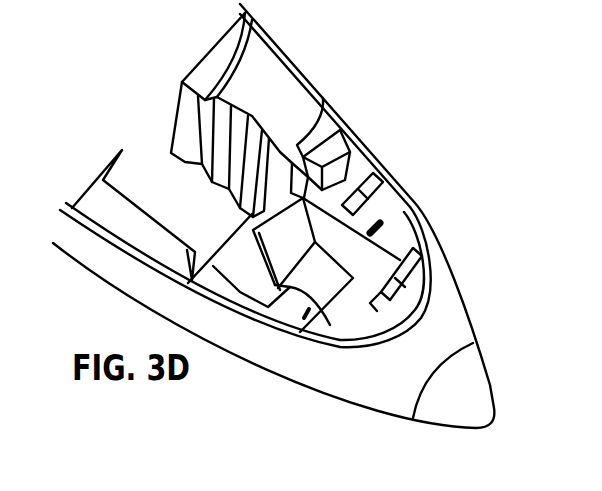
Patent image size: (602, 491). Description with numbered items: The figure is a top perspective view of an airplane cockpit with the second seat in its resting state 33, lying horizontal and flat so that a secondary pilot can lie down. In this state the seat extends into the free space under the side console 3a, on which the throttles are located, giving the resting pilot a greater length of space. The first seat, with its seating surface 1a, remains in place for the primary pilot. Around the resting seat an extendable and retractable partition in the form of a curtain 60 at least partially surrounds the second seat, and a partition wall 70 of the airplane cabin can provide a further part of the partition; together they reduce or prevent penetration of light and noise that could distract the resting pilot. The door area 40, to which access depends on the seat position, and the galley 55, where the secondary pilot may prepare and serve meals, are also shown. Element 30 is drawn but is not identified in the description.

The side console 3a is at (397, 228).
The seating surface 1a is at (352, 276).
The partition wall 70 is at (222, 60).
The curtain 60 is at (200, 153).
The door area 40 is at (270, 90).
The resting state 33 is at (285, 163).
The galley 55 is at (174, 252).
The module block 30 is at (270, 265).